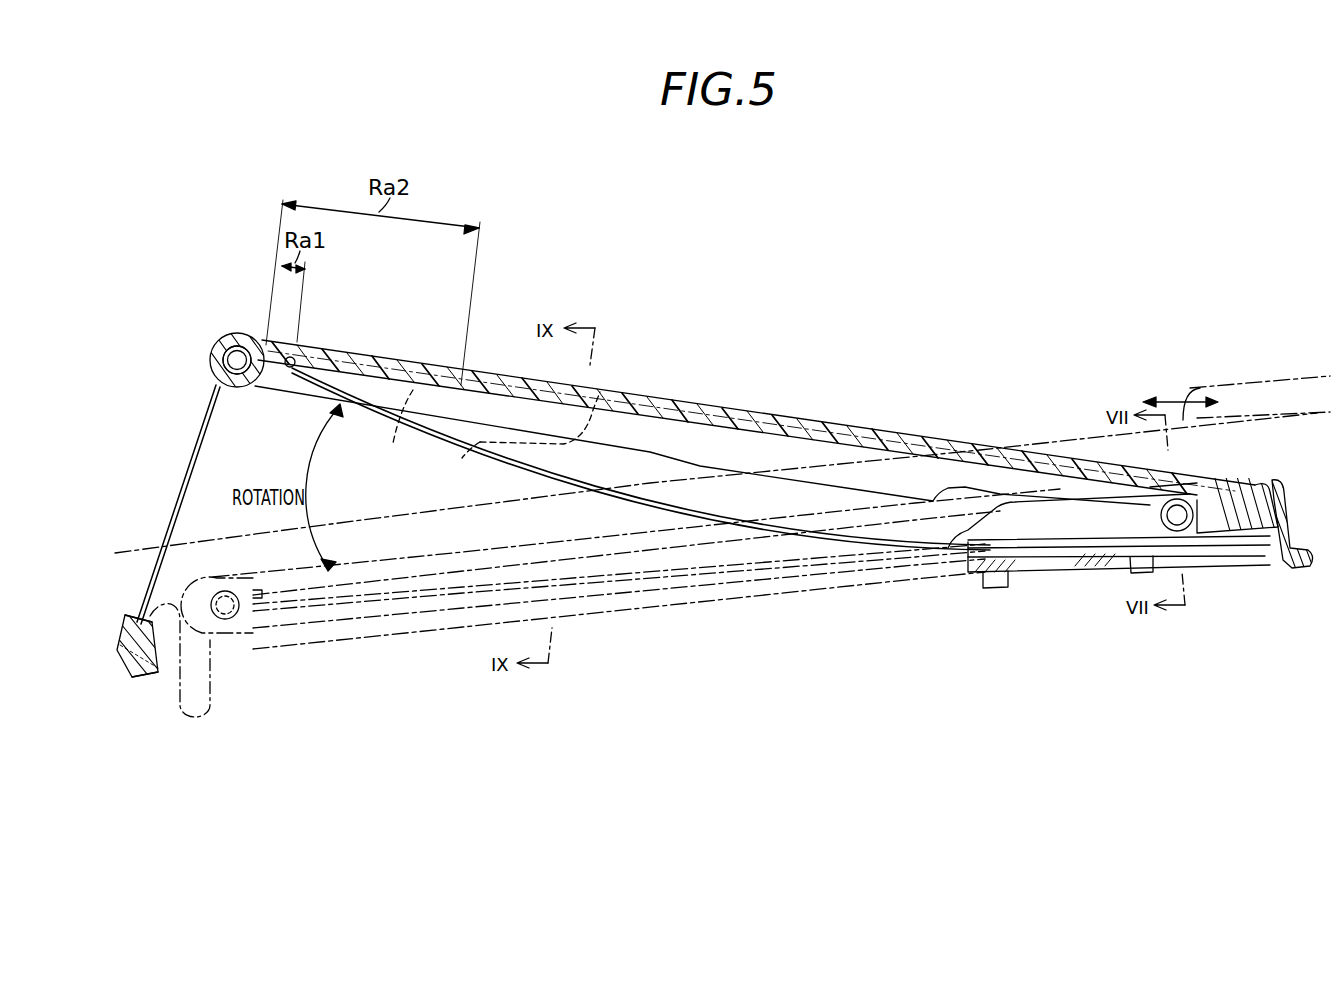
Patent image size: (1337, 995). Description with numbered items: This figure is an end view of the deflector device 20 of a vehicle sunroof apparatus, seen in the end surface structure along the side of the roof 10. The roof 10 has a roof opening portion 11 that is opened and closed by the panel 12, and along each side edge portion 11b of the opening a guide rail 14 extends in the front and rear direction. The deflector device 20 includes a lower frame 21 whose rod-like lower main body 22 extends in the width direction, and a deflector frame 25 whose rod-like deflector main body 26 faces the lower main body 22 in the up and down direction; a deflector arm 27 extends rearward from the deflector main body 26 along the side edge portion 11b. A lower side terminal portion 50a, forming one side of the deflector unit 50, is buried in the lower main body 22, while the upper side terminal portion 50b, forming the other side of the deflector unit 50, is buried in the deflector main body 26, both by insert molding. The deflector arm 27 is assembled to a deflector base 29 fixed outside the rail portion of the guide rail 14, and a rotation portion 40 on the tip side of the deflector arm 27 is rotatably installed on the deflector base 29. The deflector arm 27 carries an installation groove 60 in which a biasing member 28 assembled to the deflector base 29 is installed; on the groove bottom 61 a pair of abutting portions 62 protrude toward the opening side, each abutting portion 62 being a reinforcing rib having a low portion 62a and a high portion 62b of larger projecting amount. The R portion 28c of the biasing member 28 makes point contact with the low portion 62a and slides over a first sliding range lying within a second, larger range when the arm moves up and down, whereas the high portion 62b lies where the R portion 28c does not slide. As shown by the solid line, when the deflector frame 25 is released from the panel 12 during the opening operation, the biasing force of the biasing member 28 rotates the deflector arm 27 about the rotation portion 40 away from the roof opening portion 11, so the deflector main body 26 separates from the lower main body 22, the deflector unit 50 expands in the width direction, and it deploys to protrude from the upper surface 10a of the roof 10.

The roof 10 is at (148, 549).
The upper surface of the roof 10a is at (716, 483).
The roof opening portion 11 is at (620, 561).
The side edge portions 11b is at (205, 548).
The panel 12 is at (1230, 382).
The guide rail 14 is at (304, 637).
The deflector device 20 is at (1084, 283).
The lower frame 21 is at (135, 614).
The lower main body 22 is at (130, 680).
The deflector frame 25 is at (729, 418).
The deflector main body 26 is at (206, 352).
The deflector arm 27 is at (731, 408).
The biasing member 28 is at (613, 507).
The R portion 28c is at (295, 357).
The deflector base 29 is at (1290, 514).
The rotation portion 40 is at (1193, 504).
The deflector unit 50 is at (203, 405).
The lower side terminal portion 50a is at (143, 678).
The upper side terminal portion 50b is at (222, 343).
The installation groove 60 is at (250, 384).
The groove bottom 61 is at (395, 385).
The abutting portion 62 is at (460, 482).
The low portion 62a is at (487, 433).
The high portion 62b is at (480, 443).